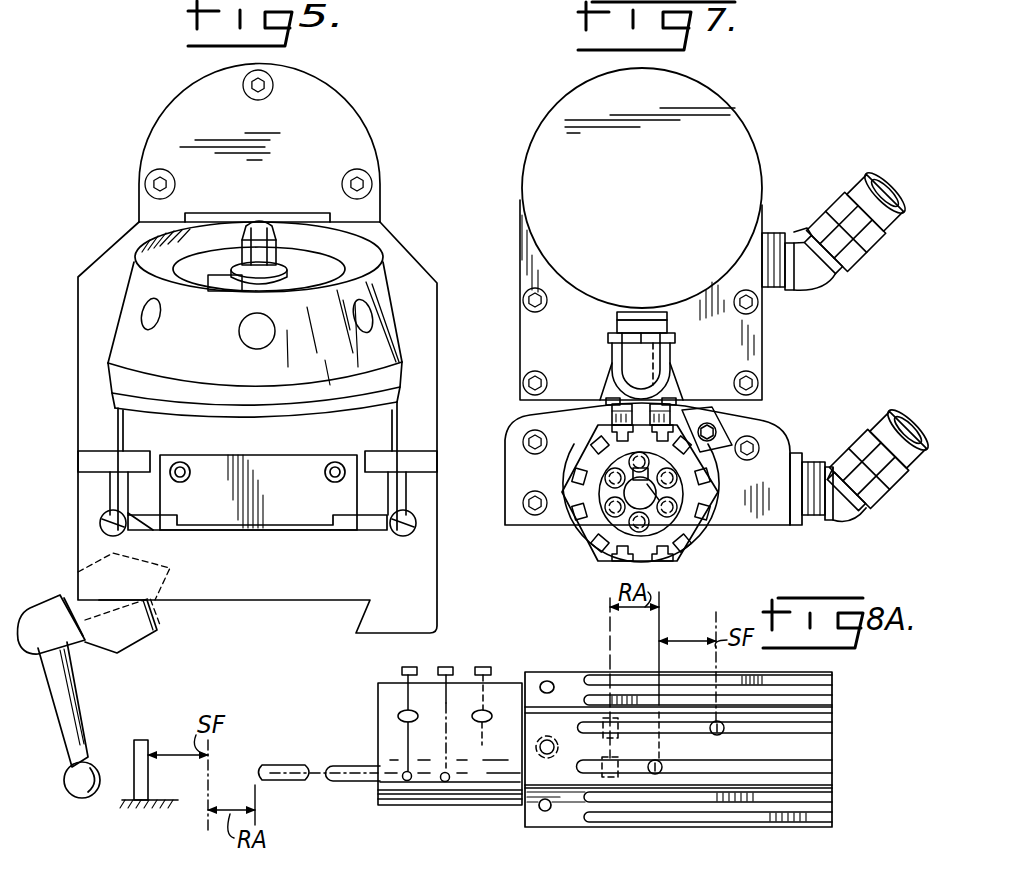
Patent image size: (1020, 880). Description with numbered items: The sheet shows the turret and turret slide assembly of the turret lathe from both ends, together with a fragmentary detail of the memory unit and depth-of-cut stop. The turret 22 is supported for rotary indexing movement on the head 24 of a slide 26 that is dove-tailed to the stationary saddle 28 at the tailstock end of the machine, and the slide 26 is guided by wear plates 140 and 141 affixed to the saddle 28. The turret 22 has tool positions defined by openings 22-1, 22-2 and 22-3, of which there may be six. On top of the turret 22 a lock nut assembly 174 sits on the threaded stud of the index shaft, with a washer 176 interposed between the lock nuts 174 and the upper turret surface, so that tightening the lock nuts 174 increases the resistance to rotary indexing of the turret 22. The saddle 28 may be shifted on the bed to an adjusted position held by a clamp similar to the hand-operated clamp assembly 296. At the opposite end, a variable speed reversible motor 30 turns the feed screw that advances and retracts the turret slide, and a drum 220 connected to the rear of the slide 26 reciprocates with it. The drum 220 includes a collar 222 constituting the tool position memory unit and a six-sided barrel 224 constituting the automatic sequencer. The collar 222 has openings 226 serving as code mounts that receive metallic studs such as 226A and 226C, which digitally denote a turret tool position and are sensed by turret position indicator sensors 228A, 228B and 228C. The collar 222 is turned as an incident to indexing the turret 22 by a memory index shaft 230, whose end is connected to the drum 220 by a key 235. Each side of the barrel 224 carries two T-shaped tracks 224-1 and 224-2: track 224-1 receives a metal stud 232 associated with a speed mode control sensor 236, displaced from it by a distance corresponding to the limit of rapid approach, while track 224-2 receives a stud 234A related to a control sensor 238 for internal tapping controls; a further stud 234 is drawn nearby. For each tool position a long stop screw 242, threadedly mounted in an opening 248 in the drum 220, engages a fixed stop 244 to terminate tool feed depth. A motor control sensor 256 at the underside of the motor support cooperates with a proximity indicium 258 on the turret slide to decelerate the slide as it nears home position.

In FIG. 5, the turret 22 is at (378, 272).
In FIG. 5, the tool position opening 22-1 is at (373, 318).
In FIG. 5, the tool position opening 22-2 is at (246, 334).
In FIG. 5, the tool position opening 22-3 is at (148, 328).
In FIG. 5, the head 24 is at (400, 402).
In FIG. 5, the slide 26 is at (138, 490).
In FIG. 7, the slide 26 is at (772, 447).
In FIG. 5, the saddle 28 is at (432, 601).
In FIG. 7, the variable speed reversible motor 30 is at (748, 158).
In FIG. 5, the wear plate 140 is at (165, 527).
In FIG. 5, the wear plate 141 is at (85, 460).
In FIG. 5, the lock nut assembly 174 is at (264, 232).
In FIG. 5, the washer 176 is at (286, 264).
In FIG. 7, the drum 220 is at (690, 555).
In FIG. 8A, the drum 220 is at (762, 831).
In FIG. 8A, the collar 222 is at (468, 805).
In FIG. 7, the six-sided barrel 224 is at (676, 563).
In FIG. 8A, the six-sided barrel 224 is at (834, 718).
In FIG. 7, the track 224-1 is at (592, 551).
In FIG. 8A, the track 224-1 is at (823, 770).
In FIG. 7, the track 224-2 is at (580, 508).
In FIG. 8A, the track 224-2 is at (823, 733).
In FIG. 8A, the opening 226 is at (445, 782).
In FIG. 8A, the stud 226A is at (396, 716).
In FIG. 8A, the stud 226C is at (478, 722).
In FIG. 8A, the turret position indicator sensor 228A is at (400, 671).
In FIG. 8A, the turret position indicator sensor 228B is at (445, 665).
In FIG. 8A, the turret position indicator sensor 228C is at (488, 667).
In FIG. 7, the memory index shaft 230 is at (632, 497).
In FIG. 7, the stud 232 is at (608, 403).
In FIG. 8A, the stud 232 is at (658, 762).
In FIG. 7, the pin 234 is at (668, 405).
In FIG. 8A, the stud 234A is at (719, 735).
In FIG. 7, the key 235 is at (648, 487).
In FIG. 7, the speed mode control sensor 236 is at (617, 404).
In FIG. 8A, the speed mode control sensor 236 is at (586, 769).
In FIG. 7, the control sensor 238 is at (672, 402).
In FIG. 8A, the control sensor 238 is at (586, 729).
In FIG. 8A, the stop screw 242 is at (302, 783).
In FIG. 8A, the fixed stop 244 is at (143, 740).
In FIG. 7, the opening 248 is at (613, 475).
In FIG. 7, the motor control sensor 256 is at (757, 382).
In FIG. 7, the proximity indicium 258 is at (715, 428).
In FIG. 5, the hand-operated clamp assembly 296 is at (65, 741).